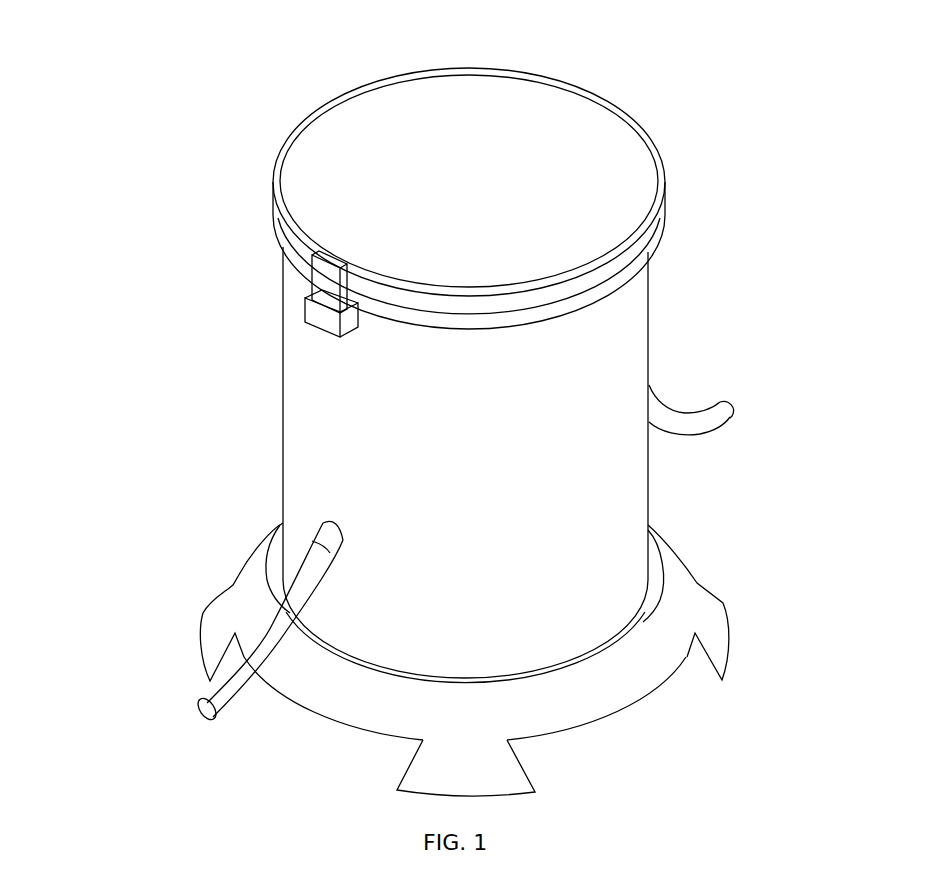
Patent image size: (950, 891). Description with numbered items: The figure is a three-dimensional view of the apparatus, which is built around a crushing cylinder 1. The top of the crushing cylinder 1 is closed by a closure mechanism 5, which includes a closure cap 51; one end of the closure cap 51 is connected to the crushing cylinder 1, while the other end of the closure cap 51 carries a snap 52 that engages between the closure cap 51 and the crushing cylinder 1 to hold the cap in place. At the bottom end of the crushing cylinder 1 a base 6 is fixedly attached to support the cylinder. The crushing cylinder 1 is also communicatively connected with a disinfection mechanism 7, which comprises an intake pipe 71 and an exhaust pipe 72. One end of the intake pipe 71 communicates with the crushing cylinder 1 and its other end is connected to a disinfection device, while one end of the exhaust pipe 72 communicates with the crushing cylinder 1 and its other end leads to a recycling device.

The crushing cylinder 1 is at (317, 427).
The closure mechanism 5 is at (343, 196).
The closure cap 51 is at (322, 183).
The snap 52 is at (317, 288).
The base 6 is at (237, 607).
The disinfection mechanism 7 is at (538, 503).
The intake pipe 71 is at (685, 413).
The exhaust pipe 72 is at (302, 580).